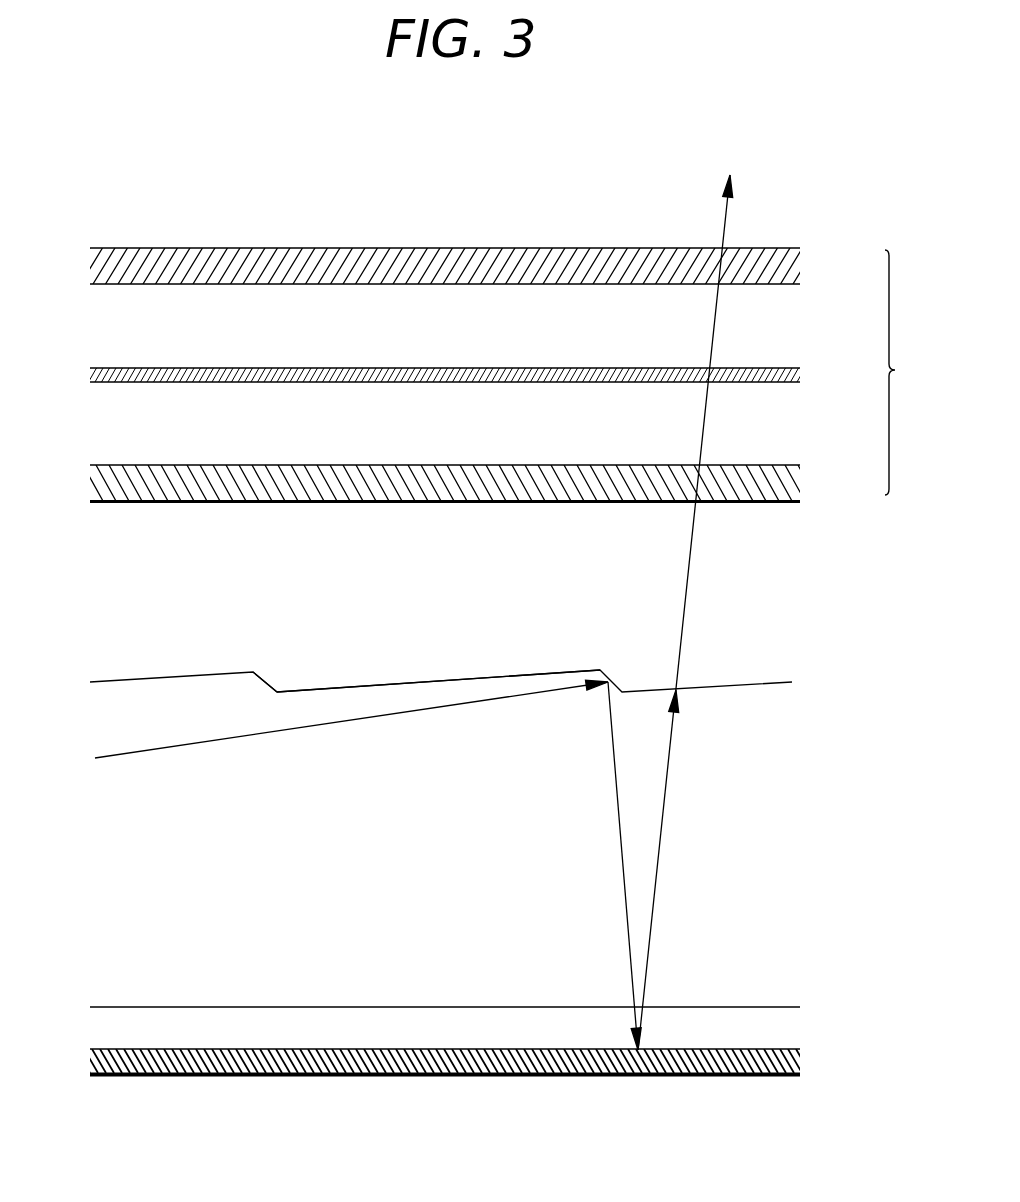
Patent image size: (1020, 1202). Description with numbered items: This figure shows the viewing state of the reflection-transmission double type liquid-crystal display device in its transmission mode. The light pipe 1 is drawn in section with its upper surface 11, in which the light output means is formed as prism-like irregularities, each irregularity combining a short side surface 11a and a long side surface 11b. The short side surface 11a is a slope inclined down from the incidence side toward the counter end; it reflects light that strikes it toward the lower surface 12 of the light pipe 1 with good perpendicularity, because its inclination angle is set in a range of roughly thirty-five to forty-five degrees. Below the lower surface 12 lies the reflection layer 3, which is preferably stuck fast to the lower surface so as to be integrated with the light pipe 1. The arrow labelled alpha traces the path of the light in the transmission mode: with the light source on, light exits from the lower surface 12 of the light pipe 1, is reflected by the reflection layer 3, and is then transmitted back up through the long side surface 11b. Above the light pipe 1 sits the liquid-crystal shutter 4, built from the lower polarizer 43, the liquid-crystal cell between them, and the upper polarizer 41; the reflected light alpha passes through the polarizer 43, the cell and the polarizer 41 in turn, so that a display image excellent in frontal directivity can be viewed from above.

The light pipe 1 is at (706, 884).
The reflection layer 3 is at (725, 1078).
The liquid-crystal shutter 4 is at (500, 372).
The polarizer 41 is at (791, 269).
The polarizer 43 is at (793, 481).
The upper surface of the light pipe 11 is at (208, 664).
The short side surface 11a is at (262, 678).
The long side surface 11b is at (378, 682).
The lower surface of the light pipe 12 is at (481, 1008).